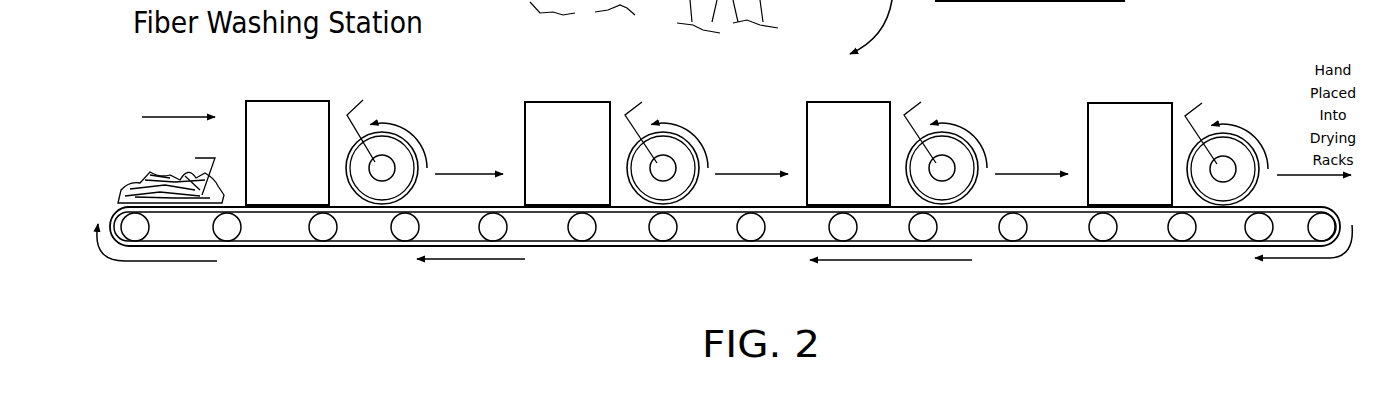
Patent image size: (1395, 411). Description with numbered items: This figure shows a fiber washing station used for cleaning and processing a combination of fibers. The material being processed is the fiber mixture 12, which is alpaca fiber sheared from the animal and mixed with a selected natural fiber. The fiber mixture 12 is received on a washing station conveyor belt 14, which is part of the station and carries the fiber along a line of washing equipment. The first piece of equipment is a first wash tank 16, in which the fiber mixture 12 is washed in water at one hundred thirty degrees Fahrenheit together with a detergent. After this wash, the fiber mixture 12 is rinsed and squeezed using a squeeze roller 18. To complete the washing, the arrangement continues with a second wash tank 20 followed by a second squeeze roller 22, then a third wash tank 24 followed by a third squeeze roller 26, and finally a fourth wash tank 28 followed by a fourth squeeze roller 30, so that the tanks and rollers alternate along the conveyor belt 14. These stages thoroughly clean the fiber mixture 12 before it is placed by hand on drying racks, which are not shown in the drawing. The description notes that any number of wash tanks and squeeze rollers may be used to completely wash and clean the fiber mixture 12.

The fiber mixture 12 is at (148, 192).
The washing station conveyor belt 14 is at (375, 243).
The first wash tank 16 is at (298, 115).
The squeeze roller 18 is at (397, 152).
The second wash tank 20 is at (578, 112).
The second squeeze roller 22 is at (682, 158).
The third wash tank 24 is at (852, 112).
The third squeeze roller 26 is at (957, 158).
The fourth wash tank 28 is at (1143, 117).
The fourth squeeze roller 30 is at (1243, 162).